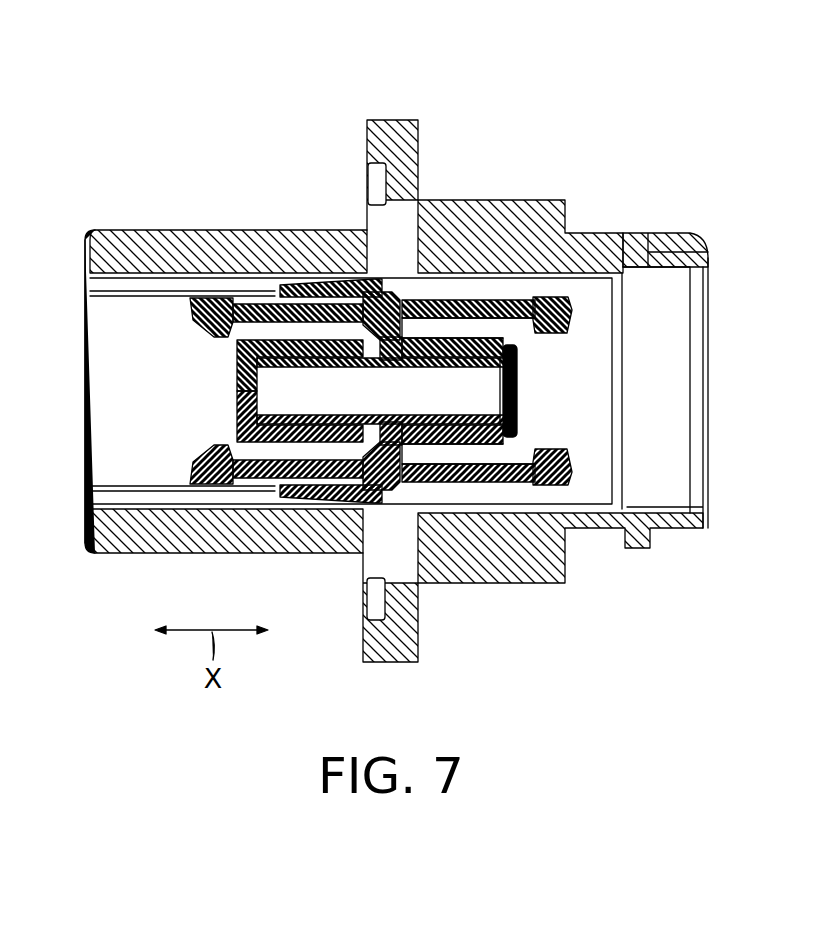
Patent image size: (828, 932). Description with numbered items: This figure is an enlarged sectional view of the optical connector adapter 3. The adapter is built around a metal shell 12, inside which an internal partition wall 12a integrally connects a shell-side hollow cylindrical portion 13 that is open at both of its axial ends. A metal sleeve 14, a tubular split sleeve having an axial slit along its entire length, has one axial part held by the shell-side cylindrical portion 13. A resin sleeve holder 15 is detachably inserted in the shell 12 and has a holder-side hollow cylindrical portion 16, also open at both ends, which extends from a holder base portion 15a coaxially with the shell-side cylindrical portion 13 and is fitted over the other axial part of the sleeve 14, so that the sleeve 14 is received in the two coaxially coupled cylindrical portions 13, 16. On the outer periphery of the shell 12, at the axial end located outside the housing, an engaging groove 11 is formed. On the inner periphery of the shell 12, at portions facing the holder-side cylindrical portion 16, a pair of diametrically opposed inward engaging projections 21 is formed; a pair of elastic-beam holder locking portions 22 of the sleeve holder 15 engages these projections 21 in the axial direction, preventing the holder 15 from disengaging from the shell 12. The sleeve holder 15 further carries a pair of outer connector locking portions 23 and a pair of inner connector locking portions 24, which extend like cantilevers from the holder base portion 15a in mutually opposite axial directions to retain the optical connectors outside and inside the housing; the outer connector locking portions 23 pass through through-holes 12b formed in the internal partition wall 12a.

The optical connector adapter 3 is at (396, 339).
The engaging groove 11 is at (612, 233).
The metal shell 12 is at (394, 363).
The internal partition wall 12a is at (417, 352).
The through-holes 12b is at (397, 497).
The shell-side hollow cylindrical portion 13 is at (508, 300).
The metal sleeve 14 is at (480, 338).
The resin sleeve holder 15 is at (350, 273).
The holder base portion 15a is at (368, 282).
The holder-side hollow cylindrical portion 16 is at (300, 290).
The inward engaging projections 21 is at (292, 305).
The holder locking portions 22 is at (325, 342).
The outer connector locking portions 23 is at (548, 298).
The inner connector locking portions 24 is at (236, 300).